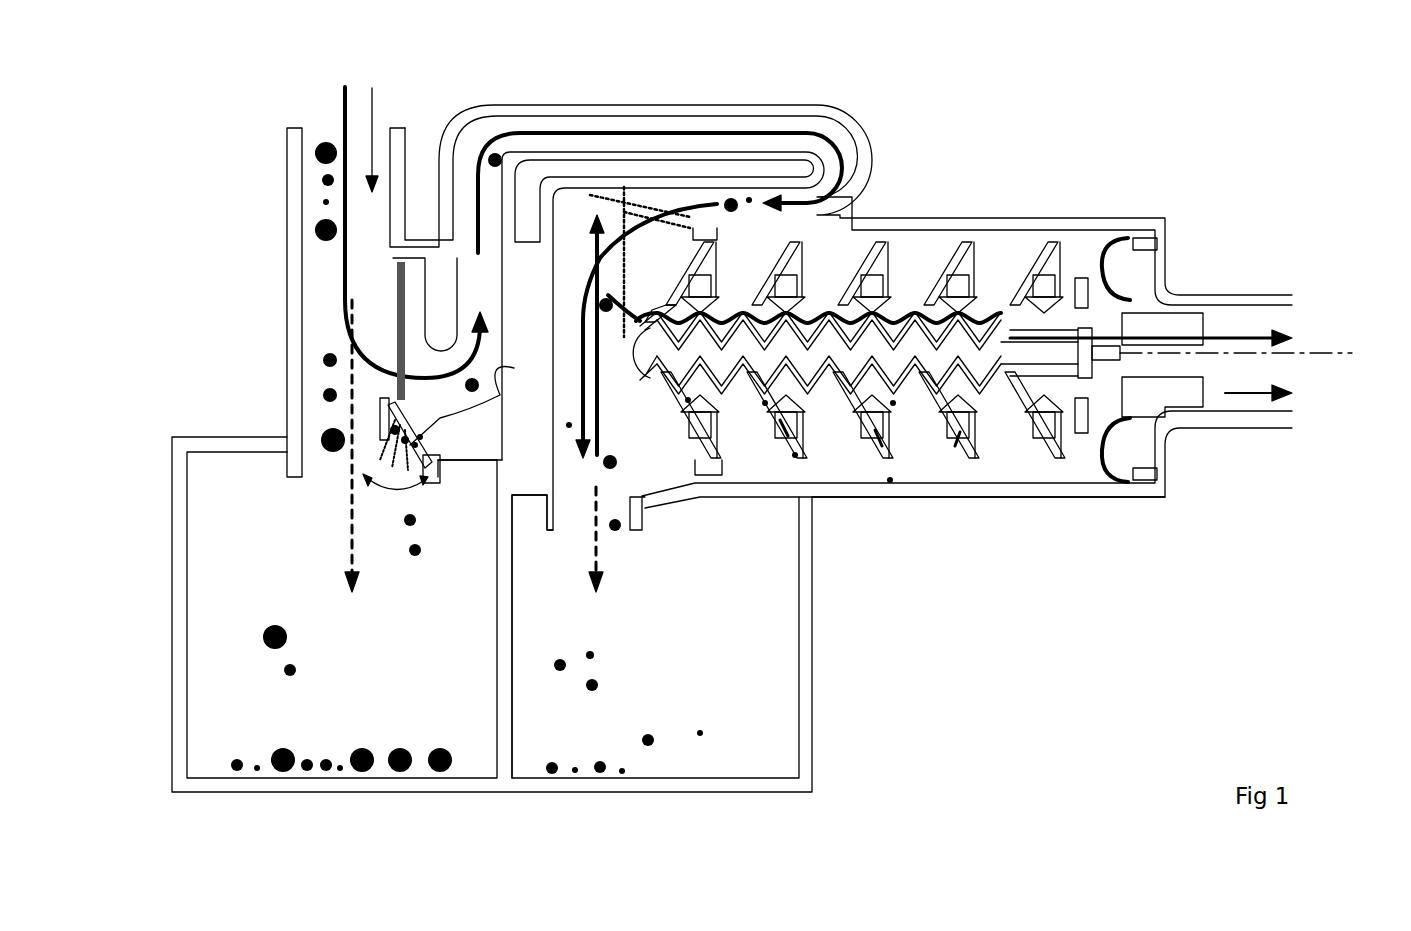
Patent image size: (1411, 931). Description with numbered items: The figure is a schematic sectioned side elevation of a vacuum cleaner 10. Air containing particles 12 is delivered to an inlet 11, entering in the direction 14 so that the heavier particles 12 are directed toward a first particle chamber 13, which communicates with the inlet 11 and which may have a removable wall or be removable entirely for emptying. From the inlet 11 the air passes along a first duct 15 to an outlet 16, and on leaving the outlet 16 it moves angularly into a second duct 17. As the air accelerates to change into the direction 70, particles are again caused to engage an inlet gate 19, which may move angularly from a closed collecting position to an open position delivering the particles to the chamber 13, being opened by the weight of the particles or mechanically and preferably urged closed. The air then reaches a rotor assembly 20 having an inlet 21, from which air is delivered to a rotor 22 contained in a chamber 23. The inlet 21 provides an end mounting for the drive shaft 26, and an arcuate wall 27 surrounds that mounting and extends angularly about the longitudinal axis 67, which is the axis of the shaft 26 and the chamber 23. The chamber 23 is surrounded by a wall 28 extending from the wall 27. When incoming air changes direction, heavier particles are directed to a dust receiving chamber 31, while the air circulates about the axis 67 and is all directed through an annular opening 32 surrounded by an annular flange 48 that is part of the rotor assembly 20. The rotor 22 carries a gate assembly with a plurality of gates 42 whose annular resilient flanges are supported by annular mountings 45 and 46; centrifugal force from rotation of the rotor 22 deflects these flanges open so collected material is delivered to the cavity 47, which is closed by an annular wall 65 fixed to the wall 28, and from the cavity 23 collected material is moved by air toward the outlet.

The vacuum cleaner 10 is at (1072, 123).
The inlet 11 is at (314, 116).
The particles 12 is at (320, 206).
The first particle chamber 13 is at (357, 680).
The direction 14 is at (373, 128).
The first duct 15 is at (331, 316).
The outlet 16 is at (320, 376).
The second duct 17 is at (481, 366).
The inlet gate 19 is at (423, 443).
The rotor assembly 20 is at (1035, 470).
The inlet 21 is at (628, 166).
The rotor 22 is at (1000, 335).
The chamber 23 is at (1003, 470).
The drive shaft 26 is at (1076, 354).
The wall 27 is at (666, 495).
The wall 28 is at (1153, 490).
The dust receiving chamber 31 is at (685, 680).
The annular opening 32 is at (692, 432).
The gates 42 is at (893, 470).
The annular mounting 45 is at (788, 310).
The annular mounting 46 is at (833, 293).
The cavity 47 is at (1155, 483).
The annular flange 48 is at (654, 306).
The annular wall 65 is at (1118, 498).
The longitudinal axis 67 is at (1300, 358).
The direction 70 is at (483, 320).